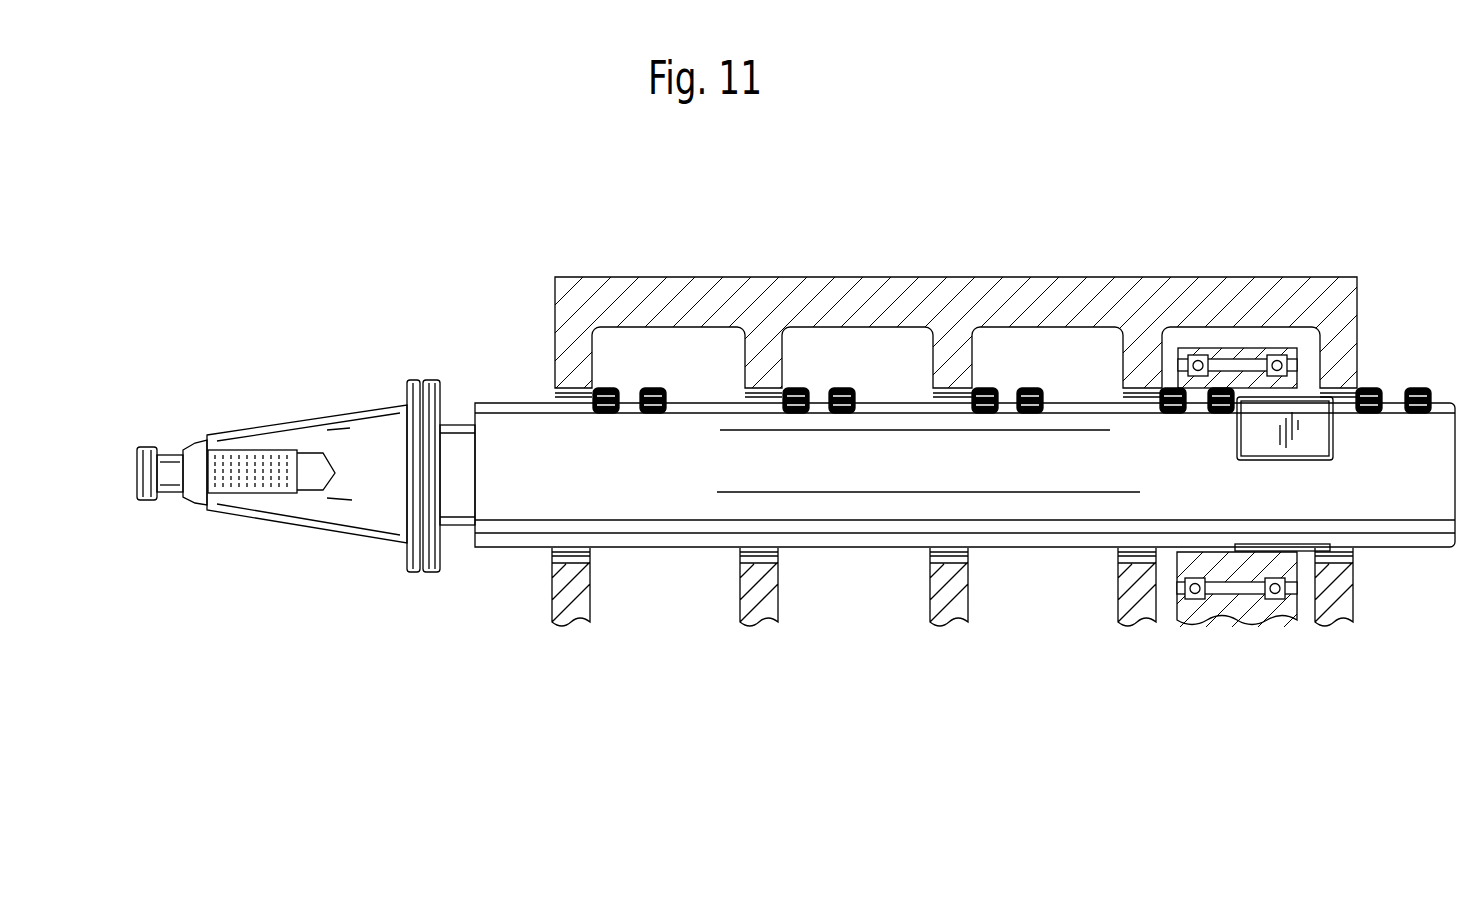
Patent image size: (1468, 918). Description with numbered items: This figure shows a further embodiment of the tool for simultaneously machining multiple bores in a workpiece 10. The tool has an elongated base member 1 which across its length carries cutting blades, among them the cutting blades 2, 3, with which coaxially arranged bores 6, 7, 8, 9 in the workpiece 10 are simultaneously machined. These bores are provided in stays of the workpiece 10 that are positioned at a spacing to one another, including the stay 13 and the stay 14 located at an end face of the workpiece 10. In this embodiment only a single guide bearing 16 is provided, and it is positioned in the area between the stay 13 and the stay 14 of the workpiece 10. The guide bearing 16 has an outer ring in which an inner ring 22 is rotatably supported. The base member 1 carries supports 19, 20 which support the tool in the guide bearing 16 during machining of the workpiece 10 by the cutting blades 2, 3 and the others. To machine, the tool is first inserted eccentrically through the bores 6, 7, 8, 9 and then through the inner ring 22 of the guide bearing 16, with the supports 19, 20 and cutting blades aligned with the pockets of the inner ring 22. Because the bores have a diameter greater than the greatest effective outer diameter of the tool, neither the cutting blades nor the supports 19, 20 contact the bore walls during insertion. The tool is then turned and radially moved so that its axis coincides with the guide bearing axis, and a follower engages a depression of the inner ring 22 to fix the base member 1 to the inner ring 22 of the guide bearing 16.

The base member 1 is at (522, 450).
The cutting blade 2 is at (655, 393).
The cutting blade 3 is at (800, 395).
The bore 6 is at (570, 388).
The bore 7 is at (765, 390).
The bore 8 is at (950, 398).
The bore 9 is at (1160, 390).
The workpiece 10 is at (843, 300).
The stay 13 is at (1133, 610).
The stay 14 is at (1338, 615).
The guide bearing 16 is at (1238, 338).
The support 19 is at (1307, 551).
The support 20 is at (1307, 420).
The inner ring 22 is at (1246, 378).